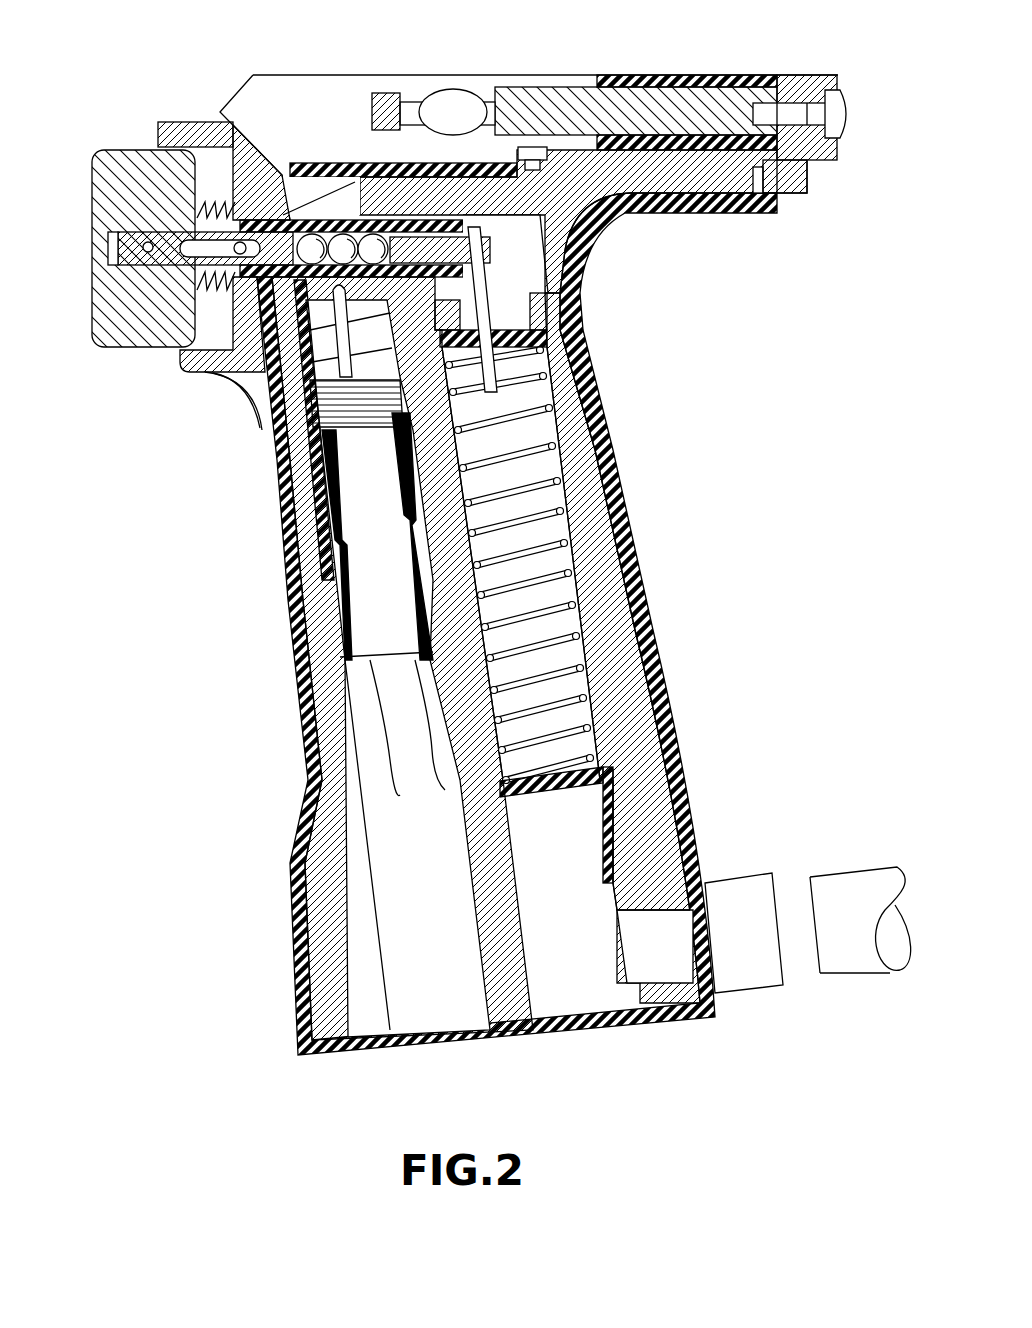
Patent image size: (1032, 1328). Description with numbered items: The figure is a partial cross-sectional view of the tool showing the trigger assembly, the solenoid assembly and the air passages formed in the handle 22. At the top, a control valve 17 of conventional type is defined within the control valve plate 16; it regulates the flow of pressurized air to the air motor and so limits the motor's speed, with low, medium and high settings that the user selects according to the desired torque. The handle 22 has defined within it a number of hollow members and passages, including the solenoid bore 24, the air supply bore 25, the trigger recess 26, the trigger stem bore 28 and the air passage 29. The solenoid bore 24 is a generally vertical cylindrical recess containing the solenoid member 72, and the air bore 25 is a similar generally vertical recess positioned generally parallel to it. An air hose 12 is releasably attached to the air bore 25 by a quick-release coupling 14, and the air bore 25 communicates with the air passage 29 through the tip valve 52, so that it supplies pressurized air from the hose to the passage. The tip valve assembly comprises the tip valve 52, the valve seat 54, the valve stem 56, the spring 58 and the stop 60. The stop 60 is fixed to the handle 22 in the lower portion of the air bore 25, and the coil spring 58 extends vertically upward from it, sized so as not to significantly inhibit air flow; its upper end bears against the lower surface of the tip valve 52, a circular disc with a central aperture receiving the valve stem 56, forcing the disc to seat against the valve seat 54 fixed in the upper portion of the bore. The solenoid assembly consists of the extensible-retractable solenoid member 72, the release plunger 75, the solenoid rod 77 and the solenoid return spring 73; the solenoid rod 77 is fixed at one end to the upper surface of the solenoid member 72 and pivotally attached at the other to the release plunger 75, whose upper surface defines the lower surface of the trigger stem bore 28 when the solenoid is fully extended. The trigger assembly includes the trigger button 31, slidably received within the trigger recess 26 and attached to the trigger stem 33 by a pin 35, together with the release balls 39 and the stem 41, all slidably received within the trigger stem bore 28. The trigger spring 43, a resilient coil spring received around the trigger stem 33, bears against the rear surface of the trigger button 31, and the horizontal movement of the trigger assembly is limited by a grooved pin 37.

The air hose 12 is at (837, 877).
The coupling 14 is at (735, 990).
The control valve plate 16 is at (800, 196).
The control valve 17 is at (850, 118).
The handle 22 is at (686, 669).
The solenoid bore 24 is at (387, 905).
The air supply bore 25 is at (555, 570).
The trigger recess 26 is at (215, 183).
The trigger stem bore 28 is at (246, 393).
The air passage 29 is at (540, 202).
The trigger button 31 is at (105, 340).
The trigger stem 33 is at (270, 160).
The pin 35 is at (200, 246).
The grooved pin 37 is at (215, 320).
The release balls 39 is at (345, 228).
The stem 41 is at (432, 222).
The trigger spring 43 is at (210, 300).
The tip valve 52 is at (577, 352).
The valve seat 54 is at (558, 325).
The valve stem 56 is at (493, 247).
The spring 58 is at (595, 745).
The stop 60 is at (608, 792).
The solenoid member 72 is at (325, 627).
The solenoid return spring 73 is at (300, 452).
The release plunger 75 is at (340, 340).
The solenoid rod 77 is at (312, 492).